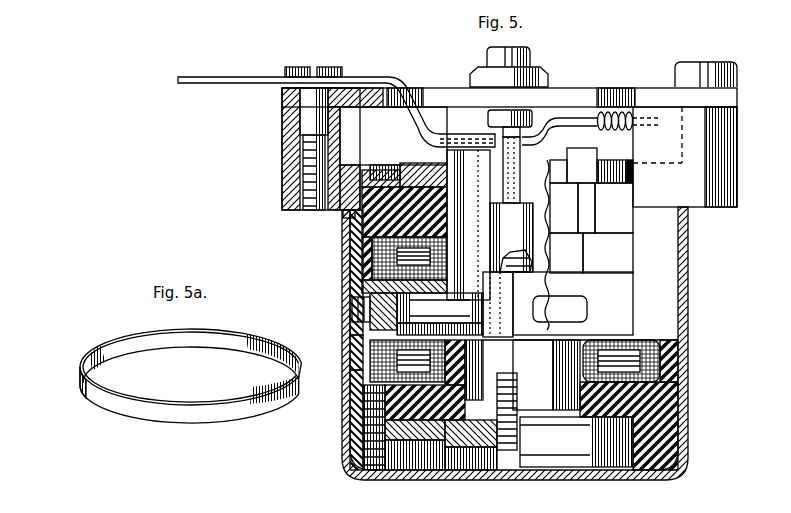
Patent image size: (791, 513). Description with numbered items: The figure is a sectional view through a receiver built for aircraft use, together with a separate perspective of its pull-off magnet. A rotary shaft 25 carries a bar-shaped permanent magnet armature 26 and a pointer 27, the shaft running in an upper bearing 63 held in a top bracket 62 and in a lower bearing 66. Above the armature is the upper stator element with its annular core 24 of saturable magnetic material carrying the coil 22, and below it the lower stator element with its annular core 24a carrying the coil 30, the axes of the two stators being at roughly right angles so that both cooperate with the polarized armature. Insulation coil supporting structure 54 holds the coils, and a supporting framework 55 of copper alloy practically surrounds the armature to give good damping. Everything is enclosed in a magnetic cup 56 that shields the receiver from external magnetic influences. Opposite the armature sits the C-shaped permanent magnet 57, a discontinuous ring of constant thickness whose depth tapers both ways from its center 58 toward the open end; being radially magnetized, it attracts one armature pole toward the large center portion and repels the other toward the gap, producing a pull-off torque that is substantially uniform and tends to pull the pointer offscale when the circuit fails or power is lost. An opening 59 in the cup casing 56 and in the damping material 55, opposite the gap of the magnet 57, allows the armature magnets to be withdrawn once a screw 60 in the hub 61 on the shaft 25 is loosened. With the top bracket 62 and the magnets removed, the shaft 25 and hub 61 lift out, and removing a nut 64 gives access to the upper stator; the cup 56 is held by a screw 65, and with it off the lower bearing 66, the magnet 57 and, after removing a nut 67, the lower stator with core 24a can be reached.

In FIG. 5, the pointer 27 is at (222, 80).
In FIG. 5, the top bracket 62 is at (578, 93).
In FIG. 5, the upper bearing 63 is at (486, 119).
In FIG. 5, the rotary shaft 25 is at (520, 185).
In FIG. 5, the supporting framework structure 55 is at (345, 211).
In FIG. 5, the insulation coil supporting structure 54 is at (688, 416).
In FIG. 5, the nut 64 is at (413, 167).
In FIG. 5, the coil 22 is at (370, 246).
In FIG. 5, the annular core 24 is at (397, 258).
In FIG. 5, the pull-off magnet 57 is at (352, 310).
In FIG. 5A, the pull-off magnet 57 is at (216, 347).
In FIG. 5, the permanent magnet armature 26 is at (440, 308).
In FIG. 5, the screw 60 is at (526, 273).
In FIG. 5, the hub 61 is at (503, 317).
In FIG. 5, the opening 59 is at (588, 311).
In FIG. 5, the coil 30 is at (349, 353).
In FIG. 5, the magnetic cup 56 is at (348, 432).
In FIG. 5, the annular core 24a is at (398, 364).
In FIG. 5, the screw 65 is at (372, 477).
In FIG. 5, the lower bearing 66 is at (514, 428).
In FIG. 5, the nut 67 is at (606, 448).
In FIG. 5A, the center 58 is at (84, 369).